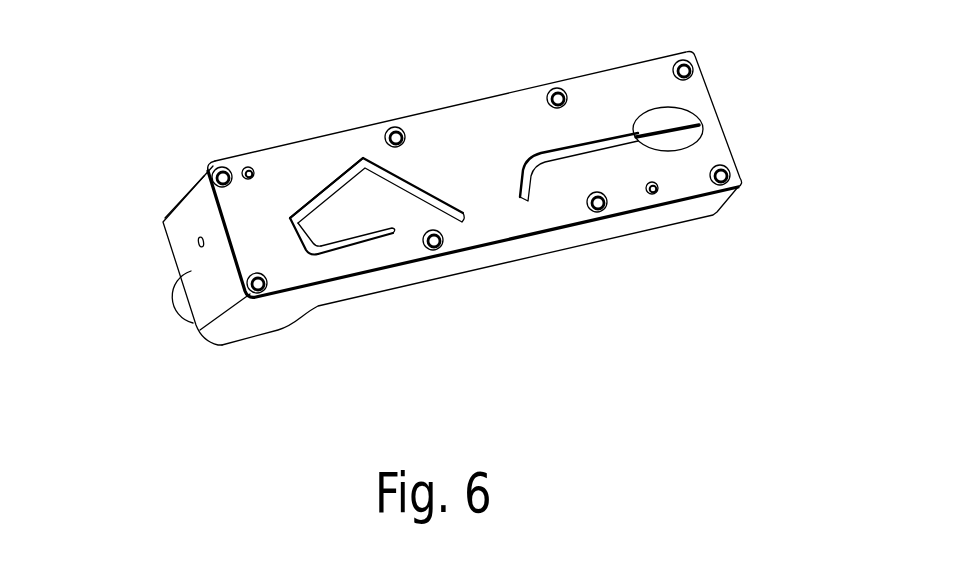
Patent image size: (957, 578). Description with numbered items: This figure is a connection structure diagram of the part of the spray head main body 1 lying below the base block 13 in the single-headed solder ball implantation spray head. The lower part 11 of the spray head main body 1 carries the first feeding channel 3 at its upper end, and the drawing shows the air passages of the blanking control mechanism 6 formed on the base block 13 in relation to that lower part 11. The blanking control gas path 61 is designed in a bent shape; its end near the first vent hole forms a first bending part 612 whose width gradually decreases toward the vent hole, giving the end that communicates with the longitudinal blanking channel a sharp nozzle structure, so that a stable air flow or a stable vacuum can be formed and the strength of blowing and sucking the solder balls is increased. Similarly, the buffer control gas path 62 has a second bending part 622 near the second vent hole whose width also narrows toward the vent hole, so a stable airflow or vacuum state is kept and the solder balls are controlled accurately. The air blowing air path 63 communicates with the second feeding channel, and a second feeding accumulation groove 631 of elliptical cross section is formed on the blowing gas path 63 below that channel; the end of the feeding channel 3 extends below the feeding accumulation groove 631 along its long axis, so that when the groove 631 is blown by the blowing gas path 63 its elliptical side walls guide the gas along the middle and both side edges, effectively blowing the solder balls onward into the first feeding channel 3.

The spray head main body 1 is at (450, 199).
The lower part 11 is at (205, 220).
The base block A 13 is at (715, 142).
The first feeding channel 3 is at (657, 130).
The elastic clip 6 is at (332, 215).
The first bending part 612 is at (303, 245).
The blanking control gas path 61 is at (367, 233).
The buffer control gas path 62 is at (332, 130).
The second bending part 622 is at (332, 177).
The air blowing air path 63 is at (696, 175).
The second feeding accumulation groove 631 is at (695, 108).